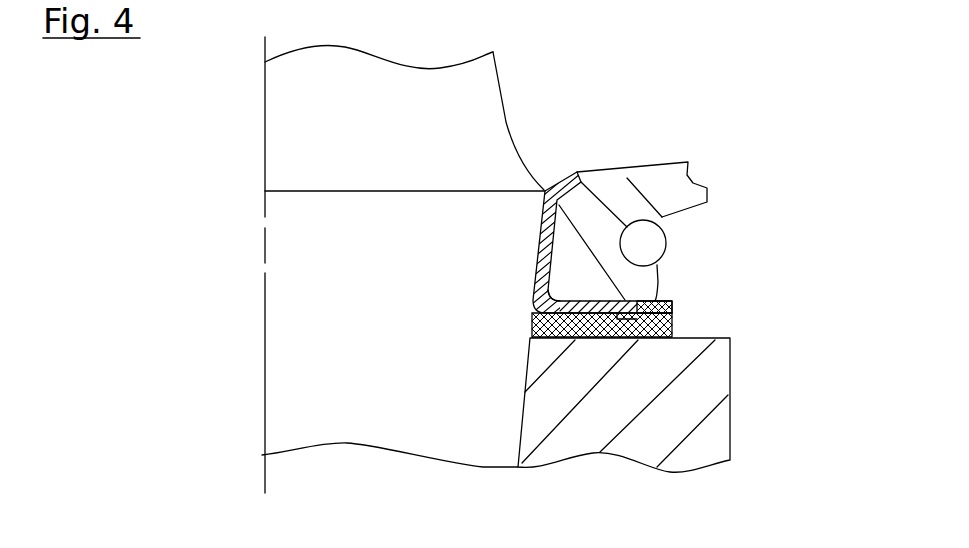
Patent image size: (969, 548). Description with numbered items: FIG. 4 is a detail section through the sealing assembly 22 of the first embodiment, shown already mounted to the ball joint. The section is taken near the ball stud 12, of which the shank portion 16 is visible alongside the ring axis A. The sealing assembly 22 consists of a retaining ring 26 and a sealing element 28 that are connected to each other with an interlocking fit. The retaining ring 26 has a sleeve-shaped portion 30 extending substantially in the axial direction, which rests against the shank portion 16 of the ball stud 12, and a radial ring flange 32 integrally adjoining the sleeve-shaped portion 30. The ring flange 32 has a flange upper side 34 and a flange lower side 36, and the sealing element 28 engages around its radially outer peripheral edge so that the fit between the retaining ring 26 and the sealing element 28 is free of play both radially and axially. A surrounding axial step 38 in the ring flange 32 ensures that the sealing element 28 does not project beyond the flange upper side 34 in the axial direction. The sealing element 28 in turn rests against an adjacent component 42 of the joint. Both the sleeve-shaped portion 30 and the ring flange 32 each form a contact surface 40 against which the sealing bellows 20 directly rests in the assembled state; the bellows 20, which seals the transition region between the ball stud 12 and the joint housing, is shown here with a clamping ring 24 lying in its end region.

The ball stud 12 is at (512, 91).
The shank portion 16 is at (293, 358).
The sealing bellows 20 is at (652, 182).
The sealing assembly 22 is at (557, 343).
The clamping ring 24 is at (650, 244).
The retaining ring 26 is at (542, 213).
The sealing element 28 is at (530, 325).
The sleeve-shaped portion 30 is at (542, 242).
The ring flange 32 is at (672, 322).
The flange upper side 34 is at (632, 301).
The flange lower side 36 is at (533, 315).
The axial step 38 is at (627, 328).
The contact surface 40 is at (562, 300).
The adjacent component 42 is at (713, 438).